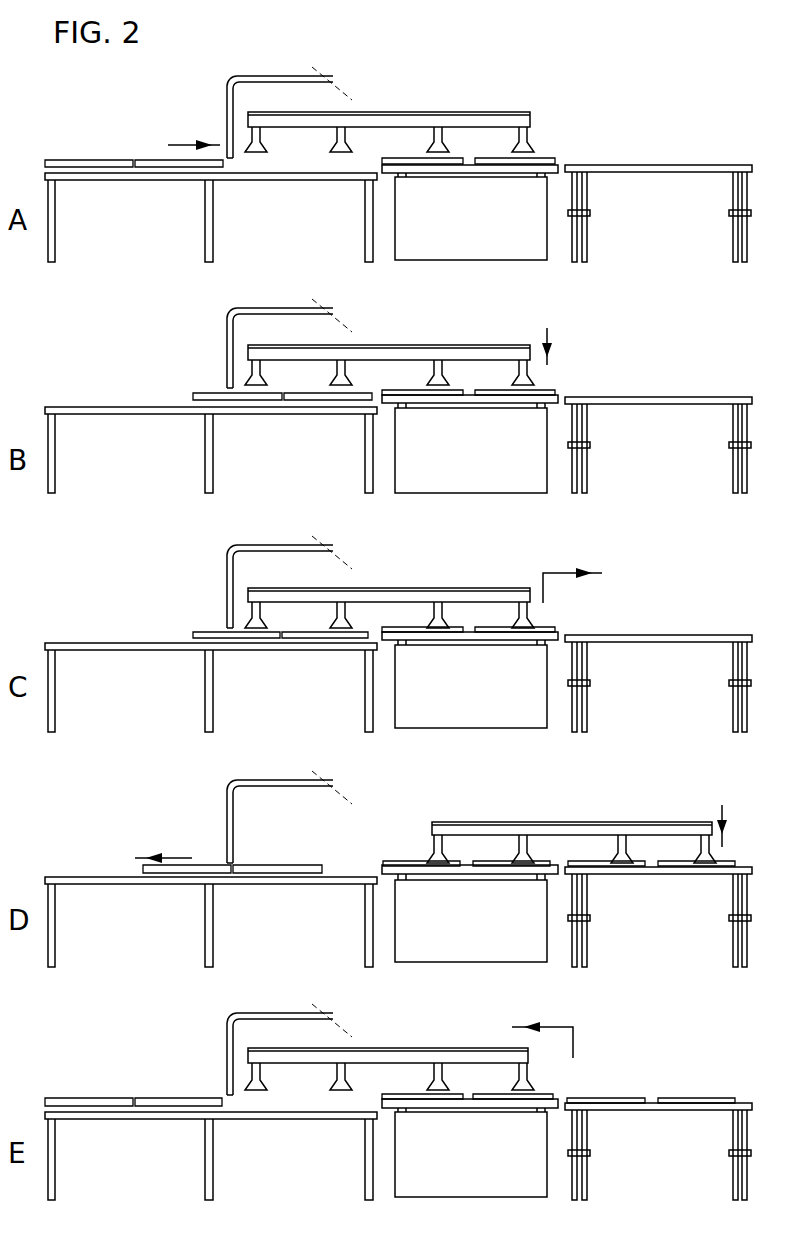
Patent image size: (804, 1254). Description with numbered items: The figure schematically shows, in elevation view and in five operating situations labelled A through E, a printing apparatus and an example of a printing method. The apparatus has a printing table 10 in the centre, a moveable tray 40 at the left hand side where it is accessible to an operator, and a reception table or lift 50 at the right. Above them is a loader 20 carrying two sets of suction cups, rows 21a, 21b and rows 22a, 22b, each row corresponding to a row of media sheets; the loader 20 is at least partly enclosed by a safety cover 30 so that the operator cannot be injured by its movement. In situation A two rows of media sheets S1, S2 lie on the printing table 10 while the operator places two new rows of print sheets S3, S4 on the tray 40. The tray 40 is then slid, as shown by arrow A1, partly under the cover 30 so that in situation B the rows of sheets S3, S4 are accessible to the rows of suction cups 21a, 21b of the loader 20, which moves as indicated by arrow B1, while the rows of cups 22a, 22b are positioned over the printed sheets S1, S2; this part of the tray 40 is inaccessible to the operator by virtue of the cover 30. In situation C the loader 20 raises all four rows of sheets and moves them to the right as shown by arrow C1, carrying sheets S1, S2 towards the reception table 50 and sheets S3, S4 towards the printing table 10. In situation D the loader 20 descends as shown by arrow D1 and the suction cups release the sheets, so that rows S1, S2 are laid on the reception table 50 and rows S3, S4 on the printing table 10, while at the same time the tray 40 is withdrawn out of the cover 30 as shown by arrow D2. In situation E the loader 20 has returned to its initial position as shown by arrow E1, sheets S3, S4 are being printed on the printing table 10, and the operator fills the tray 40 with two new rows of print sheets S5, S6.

The printing table 10 is at (556, 164).
The loader 20 is at (505, 118).
The row of suction cups 21a is at (343, 140).
The row of suction cups 21b is at (258, 140).
The row of suction cups 22a is at (530, 145).
The row of suction cups 22b is at (445, 140).
The safety cover 30 is at (227, 95).
The moveable tray 40 is at (50, 160).
The reception table 50 is at (672, 165).
The row of media sheets S1 is at (536, 160).
The row of media sheets S2 is at (405, 160).
The row of print sheets S3 is at (165, 160).
The row of print sheets S4 is at (98, 160).
The row of print sheets S5 is at (165, 1098).
The row of print sheets S6 is at (97, 1098).
The arrow A1 is at (194, 134).
The arrow B1 is at (564, 345).
The arrow C1 is at (563, 574).
The arrow D1 is at (740, 826).
The arrow D2 is at (163, 847).
The arrow E1 is at (563, 1039).